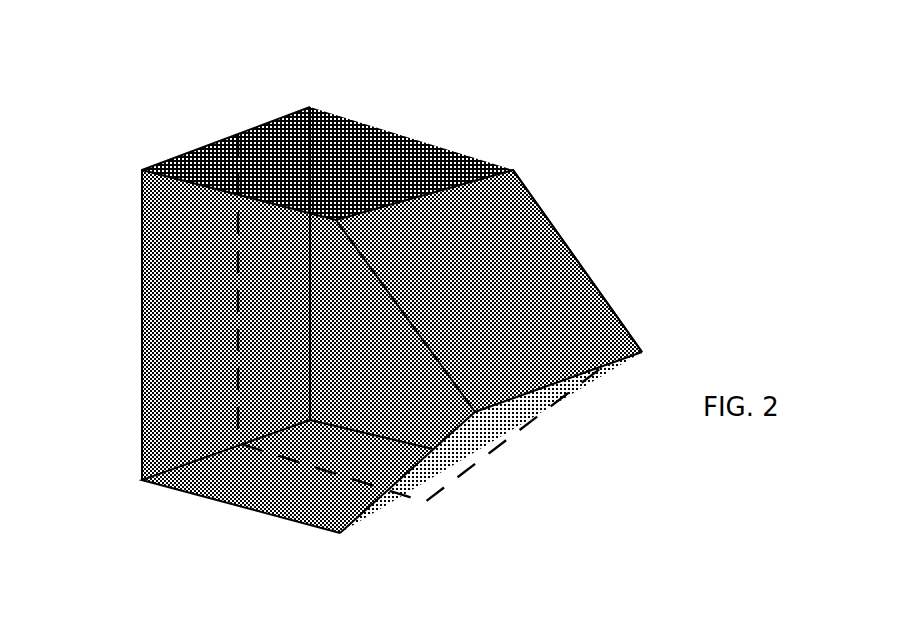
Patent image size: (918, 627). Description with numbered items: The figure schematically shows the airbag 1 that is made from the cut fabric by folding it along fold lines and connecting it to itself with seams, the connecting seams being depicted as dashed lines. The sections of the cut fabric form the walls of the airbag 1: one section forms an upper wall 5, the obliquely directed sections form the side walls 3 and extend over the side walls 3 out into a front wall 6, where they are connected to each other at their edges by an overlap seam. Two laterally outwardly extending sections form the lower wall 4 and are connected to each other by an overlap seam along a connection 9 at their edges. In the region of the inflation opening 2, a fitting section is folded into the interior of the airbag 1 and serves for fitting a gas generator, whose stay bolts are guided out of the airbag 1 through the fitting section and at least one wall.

The airbag 1 is at (381, 319).
The inflation opening 2 is at (605, 373).
The side walls 3 is at (212, 498).
The lower wall 4 is at (525, 437).
The upper wall 5 is at (487, 202).
The front wall 6 is at (180, 324).
The connection 9 is at (328, 473).